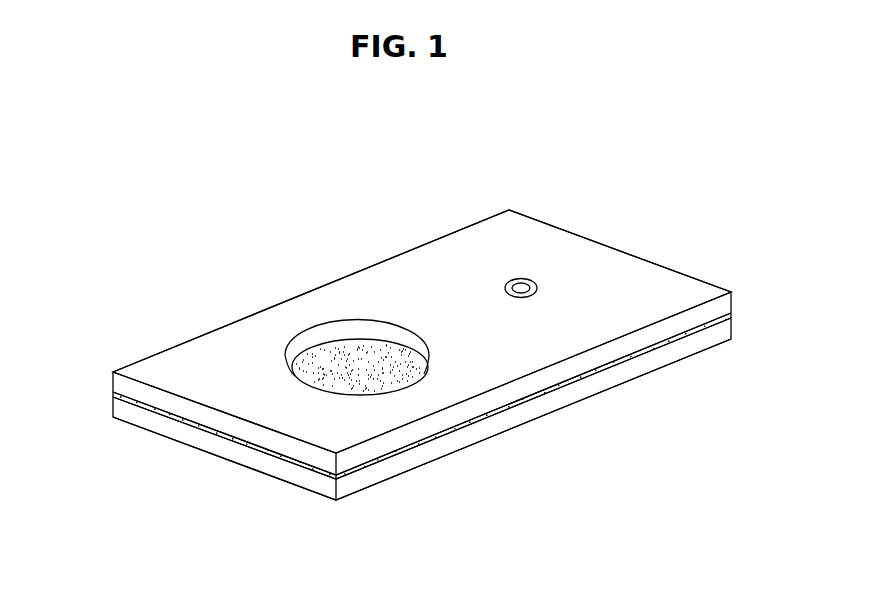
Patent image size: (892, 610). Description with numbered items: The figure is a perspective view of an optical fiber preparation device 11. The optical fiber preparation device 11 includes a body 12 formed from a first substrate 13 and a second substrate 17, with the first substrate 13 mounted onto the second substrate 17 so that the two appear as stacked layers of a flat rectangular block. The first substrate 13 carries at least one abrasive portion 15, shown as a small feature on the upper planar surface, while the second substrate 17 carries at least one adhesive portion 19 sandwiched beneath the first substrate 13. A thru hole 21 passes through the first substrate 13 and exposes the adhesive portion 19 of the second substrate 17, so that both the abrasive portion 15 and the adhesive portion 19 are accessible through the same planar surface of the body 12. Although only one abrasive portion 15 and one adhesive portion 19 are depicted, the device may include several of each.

The optical fiber preparation device 11 is at (229, 237).
The body 12 is at (138, 350).
The first substrate 13 is at (723, 306).
The abrasive portion 15 is at (538, 274).
The second substrate 17 is at (712, 340).
The adhesive portion 19 is at (113, 394).
The thru hole 21 is at (295, 372).